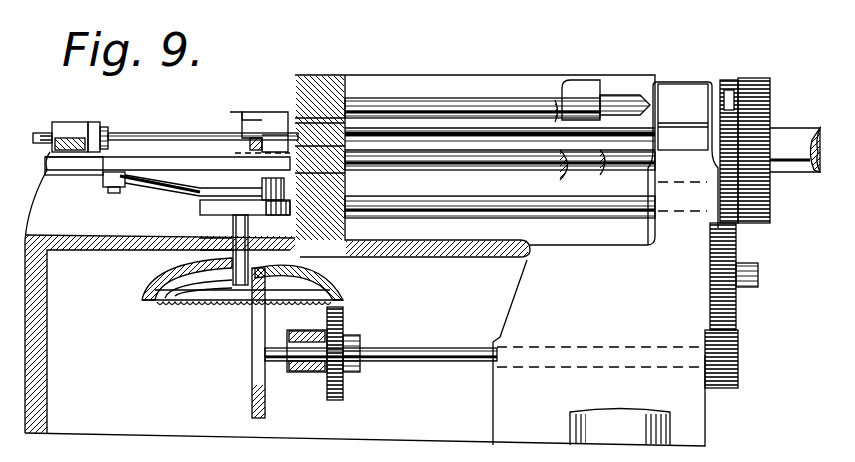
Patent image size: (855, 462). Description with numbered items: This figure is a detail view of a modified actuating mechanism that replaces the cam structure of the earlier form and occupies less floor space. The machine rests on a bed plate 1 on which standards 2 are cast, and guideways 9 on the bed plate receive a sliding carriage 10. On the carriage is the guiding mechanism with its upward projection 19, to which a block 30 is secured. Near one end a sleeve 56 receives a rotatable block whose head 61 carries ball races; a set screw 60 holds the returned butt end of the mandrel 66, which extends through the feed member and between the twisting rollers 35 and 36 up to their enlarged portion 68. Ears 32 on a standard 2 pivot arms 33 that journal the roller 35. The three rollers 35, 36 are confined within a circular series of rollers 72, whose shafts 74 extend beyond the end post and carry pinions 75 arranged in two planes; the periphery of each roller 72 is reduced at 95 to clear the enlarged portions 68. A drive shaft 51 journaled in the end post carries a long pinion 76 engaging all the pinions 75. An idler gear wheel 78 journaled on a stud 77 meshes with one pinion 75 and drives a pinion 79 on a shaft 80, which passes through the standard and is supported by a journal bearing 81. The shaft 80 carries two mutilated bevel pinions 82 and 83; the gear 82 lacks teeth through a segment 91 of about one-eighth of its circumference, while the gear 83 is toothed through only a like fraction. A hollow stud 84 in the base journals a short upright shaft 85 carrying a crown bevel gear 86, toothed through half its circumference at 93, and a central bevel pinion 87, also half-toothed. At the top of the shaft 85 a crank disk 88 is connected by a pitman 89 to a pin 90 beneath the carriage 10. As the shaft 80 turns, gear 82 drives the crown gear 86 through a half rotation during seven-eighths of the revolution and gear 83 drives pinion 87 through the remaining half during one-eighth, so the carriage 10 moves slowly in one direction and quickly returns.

The bed plate 1 is at (366, 308).
The standards 2 is at (490, 166).
The guideways 9 is at (84, 165).
The carriage 10 is at (176, 158).
The upward projection 19 is at (240, 114).
The block 30 is at (272, 118).
The ears 32 is at (712, 82).
The arms 33 is at (683, 117).
The roller 35 is at (386, 120).
The rollers 36 is at (437, 150).
The drive shaft 51 is at (793, 168).
The sleeve 56 is at (80, 128).
The set screw 60 is at (40, 133).
The head 61 is at (47, 166).
The mandrel 66 is at (146, 126).
The enlarged portion 68 is at (572, 162).
The rollers 72 is at (490, 98).
The shafts 74 is at (575, 446).
The pinions 75 is at (765, 100).
The pinion 76 is at (772, 132).
The stud 77 is at (758, 275).
The gear wheel 78 is at (738, 243).
The pinion 79 is at (738, 345).
The shaft 80 is at (452, 348).
The journal bearing 81 is at (305, 372).
The bevel pinion 82 is at (352, 325).
The bevel pinion 83 is at (254, 362).
The hollow stud 84 is at (222, 209).
The upright shaft 85 is at (232, 238).
The crown bevel gear 86 is at (312, 261).
The bevel pinion 87 is at (216, 290).
The crank disk 88 is at (196, 191).
The pitman 89 is at (135, 189).
The pin 90 is at (112, 193).
The segment 91 is at (358, 300).
The toothed portion 93 is at (231, 304).
The reduced periphery 95 is at (604, 82).